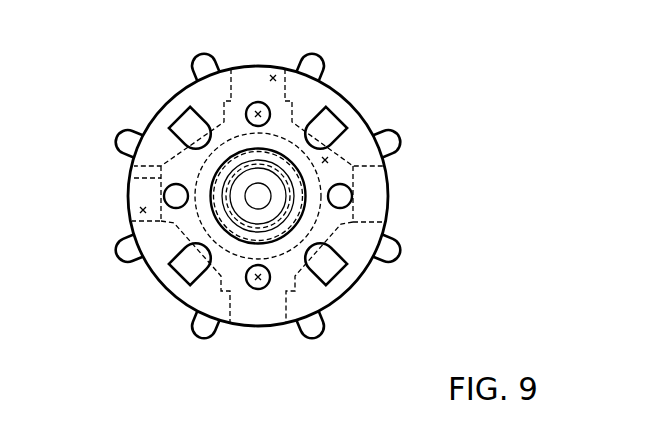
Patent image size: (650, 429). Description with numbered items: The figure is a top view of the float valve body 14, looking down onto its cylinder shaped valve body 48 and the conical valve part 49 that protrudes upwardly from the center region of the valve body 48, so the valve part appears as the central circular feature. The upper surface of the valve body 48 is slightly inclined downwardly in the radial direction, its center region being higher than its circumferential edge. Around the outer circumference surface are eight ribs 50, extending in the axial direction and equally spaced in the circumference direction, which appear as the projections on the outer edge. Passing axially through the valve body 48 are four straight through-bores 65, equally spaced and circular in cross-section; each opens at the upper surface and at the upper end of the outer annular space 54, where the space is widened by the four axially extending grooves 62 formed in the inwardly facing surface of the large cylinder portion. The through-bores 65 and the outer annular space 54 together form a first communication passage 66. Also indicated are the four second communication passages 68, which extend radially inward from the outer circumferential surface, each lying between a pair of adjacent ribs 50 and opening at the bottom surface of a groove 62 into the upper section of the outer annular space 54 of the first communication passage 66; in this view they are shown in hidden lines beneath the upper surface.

The float valve body 14 is at (259, 190).
The valve body 48 is at (344, 282).
The conical valve part 49 is at (258, 196).
The ribs 50 is at (127, 130).
The outer annular space 54 is at (331, 158).
The grooves 62 is at (158, 173).
The through-bores 65 is at (258, 197).
The first communication passage 66 is at (253, 103).
The second communication passages 68 is at (274, 73).